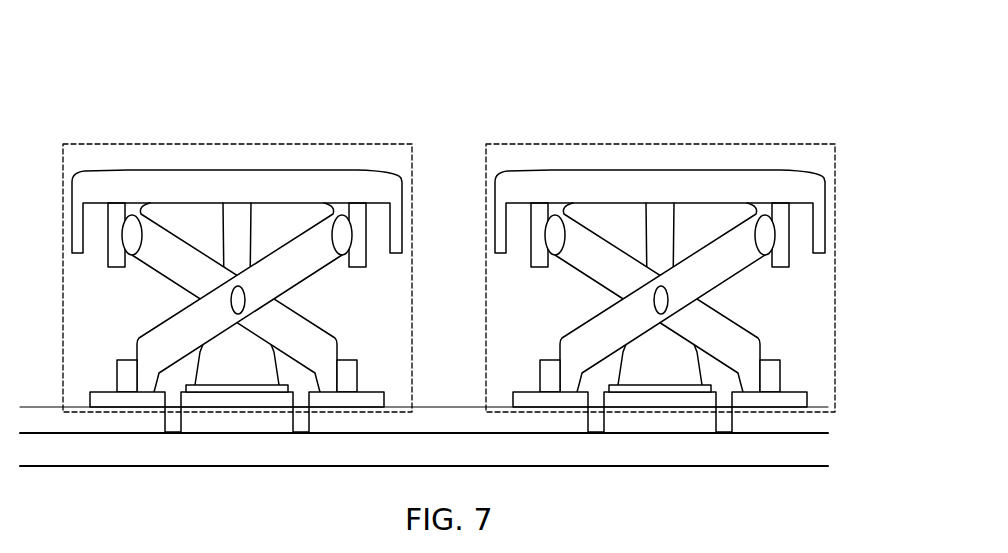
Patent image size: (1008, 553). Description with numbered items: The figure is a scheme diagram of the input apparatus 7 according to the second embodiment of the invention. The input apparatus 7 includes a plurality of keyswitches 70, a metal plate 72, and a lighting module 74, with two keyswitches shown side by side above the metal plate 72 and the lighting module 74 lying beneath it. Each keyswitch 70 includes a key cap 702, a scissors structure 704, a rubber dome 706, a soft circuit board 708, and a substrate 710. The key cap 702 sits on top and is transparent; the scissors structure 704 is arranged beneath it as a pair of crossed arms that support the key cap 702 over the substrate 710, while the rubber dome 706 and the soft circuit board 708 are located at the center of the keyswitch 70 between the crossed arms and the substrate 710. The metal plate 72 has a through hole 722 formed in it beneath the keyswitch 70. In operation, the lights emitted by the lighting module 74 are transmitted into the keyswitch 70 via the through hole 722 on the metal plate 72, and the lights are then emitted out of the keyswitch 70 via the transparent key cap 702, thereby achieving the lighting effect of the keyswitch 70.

The input apparatus 7 is at (569, 87).
The keyswitch 70 is at (497, 143).
The key cap 702 is at (767, 168).
The scissors structure 704 is at (717, 327).
The rubber dome 706 is at (667, 378).
The soft circuit board 708 is at (713, 386).
The substrate 710 is at (803, 400).
The metal plate 72 is at (823, 423).
The lighting module 74 is at (823, 450).
The through hole 722 is at (725, 420).